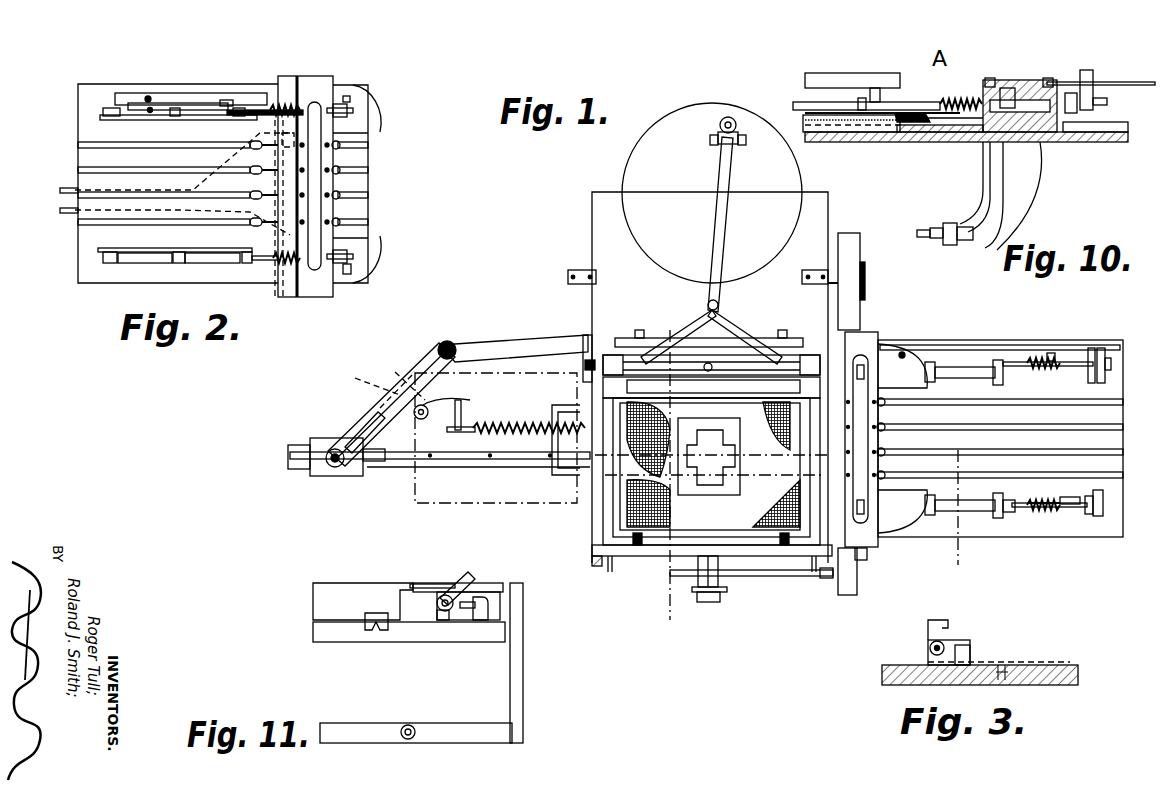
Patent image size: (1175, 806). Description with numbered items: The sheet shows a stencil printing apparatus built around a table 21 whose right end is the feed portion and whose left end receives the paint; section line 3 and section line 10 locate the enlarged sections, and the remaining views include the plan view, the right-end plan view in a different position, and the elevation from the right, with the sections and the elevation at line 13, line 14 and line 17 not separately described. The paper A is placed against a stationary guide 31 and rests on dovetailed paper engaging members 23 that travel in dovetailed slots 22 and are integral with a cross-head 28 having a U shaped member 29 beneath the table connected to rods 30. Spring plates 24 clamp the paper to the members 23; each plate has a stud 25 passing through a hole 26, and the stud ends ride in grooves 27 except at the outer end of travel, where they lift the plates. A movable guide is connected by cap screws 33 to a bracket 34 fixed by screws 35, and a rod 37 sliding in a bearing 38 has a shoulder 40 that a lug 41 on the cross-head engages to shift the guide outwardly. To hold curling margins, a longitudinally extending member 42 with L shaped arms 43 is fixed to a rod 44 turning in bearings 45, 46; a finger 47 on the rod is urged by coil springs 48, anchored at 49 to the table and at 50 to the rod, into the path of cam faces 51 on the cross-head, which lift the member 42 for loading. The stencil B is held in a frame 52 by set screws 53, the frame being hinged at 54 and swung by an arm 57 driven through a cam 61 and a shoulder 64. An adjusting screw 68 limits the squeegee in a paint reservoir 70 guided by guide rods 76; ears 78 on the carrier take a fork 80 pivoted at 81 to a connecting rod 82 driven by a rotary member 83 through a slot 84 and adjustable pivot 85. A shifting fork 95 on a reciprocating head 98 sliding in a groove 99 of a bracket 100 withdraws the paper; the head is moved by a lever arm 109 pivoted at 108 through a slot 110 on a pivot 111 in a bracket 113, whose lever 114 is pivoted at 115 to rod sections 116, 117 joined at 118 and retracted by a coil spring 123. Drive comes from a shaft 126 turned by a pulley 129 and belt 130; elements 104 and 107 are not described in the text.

In FIG. 1, the section line 3— 3 is at (945, 462).
In FIG. 2, the section line 10— 10 is at (398, 128).
In FIG. 1, the direction arrow 13 is at (695, 290).
In FIG. 1, the direction arrow 14 is at (698, 624).
In FIG. 1, the direction arrow 17 is at (300, 455).
In FIG. 2, the table 21 is at (90, 280).
In FIG. 10, the table 21 is at (1090, 143).
In FIG. 1, the table 21 is at (995, 340).
In FIG. 2, the dovetailed slots 22 is at (368, 222).
In FIG. 10, the dovetailed slots 22 is at (1112, 122).
In FIG. 1, the dovetailed slots 22 is at (1123, 398).
In FIG. 11, the dovetailed slots 22 is at (372, 632).
In FIG. 3, the dovetailed slots 22 is at (1008, 682).
In FIG. 2, the paper engaging members 23 is at (262, 198).
In FIG. 10, the paper engaging members 23 is at (935, 143).
In FIG. 10, the spring plates 24 is at (940, 90).
In FIG. 10, the stud 25 is at (893, 143).
In FIG. 10, the hole 26 is at (908, 143).
In FIG. 10, the grooves 27 is at (853, 142).
In FIG. 2, the cross-head 28 is at (368, 184).
In FIG. 10, the cross-head 28 is at (1067, 95).
In FIG. 1, the cross-head 28 is at (882, 437).
In FIG. 2, the U shaped member 29 is at (290, 297).
In FIG. 10, the U shaped member 29 is at (1032, 200).
In FIG. 1, the U shaped member 29 is at (865, 345).
In FIG. 2, the rods 30 is at (68, 212).
In FIG. 10, the rods 30 is at (932, 246).
In FIG. 2, the stationary guide 31 is at (212, 265).
In FIG. 3, the stationary guide 31 is at (968, 650).
In FIG. 2, the cap screws 33 is at (228, 100).
In FIG. 2, the bracket 34 is at (208, 93).
In FIG. 1, the bracket 34 is at (1020, 360).
In FIG. 2, the screws 35 is at (150, 96).
In FIG. 1, the screws 35 is at (902, 352).
In FIG. 2, the rod 37 is at (255, 108).
In FIG. 10, the rod 37 is at (1082, 120).
In FIG. 1, the rod 37 is at (1065, 358).
In FIG. 11, the rod 37 is at (478, 598).
In FIG. 2, the bearing 38 is at (342, 102).
In FIG. 10, the bearing 38 is at (1088, 78).
In FIG. 1, the bearing 38 is at (1100, 350).
In FIG. 11, the bearing 38 is at (480, 622).
In FIG. 1, the shoulder 40 is at (1052, 353).
In FIG. 1, the lug 41 is at (890, 325).
In FIG. 2, the longitudinally extending member 42 is at (142, 248).
In FIG. 10, the longitudinally extending member 42 is at (872, 88).
In FIG. 1, the longitudinally extending member 42 is at (975, 516).
In FIG. 3, the longitudinally extending member 42 is at (965, 660).
In FIG. 2, the L shaped arms 43 is at (107, 265).
In FIG. 10, the L shaped arms 43 is at (880, 107).
In FIG. 1, the L shaped arms 43 is at (1008, 512).
In FIG. 3, the L shaped arms 43 is at (960, 645).
In FIG. 2, the rod 44 is at (150, 265).
In FIG. 10, the rod 44 is at (835, 103).
In FIG. 1, the rod 44 is at (1072, 516).
In FIG. 11, the rod 44 is at (435, 588).
In FIG. 3, the rod 44 is at (928, 648).
In FIG. 2, the bearing 45 is at (243, 265).
In FIG. 1, the bearing 45 is at (1090, 516).
In FIG. 11, the bearing 45 is at (445, 620).
In FIG. 2, the bearing 46 is at (124, 285).
In FIG. 1, the bearing 46 is at (870, 550).
In FIG. 2, the finger 47 is at (366, 91).
In FIG. 10, the finger 47 is at (1090, 70).
In FIG. 1, the finger 47 is at (1111, 365).
In FIG. 11, the finger 47 is at (472, 575).
In FIG. 2, the coil springs 48 is at (307, 297).
In FIG. 10, the coil springs 48 is at (1010, 100).
In FIG. 1, the coil springs 48 is at (1045, 368).
In FIG. 2, the spring anchorage on table 49 is at (302, 78).
In FIG. 10, the spring anchorage on table 49 is at (962, 143).
In FIG. 1, the spring anchorage on table 49 is at (1035, 516).
In FIG. 10, the spring anchorage on rod 50 is at (1017, 132).
In FIG. 1, the spring anchorage on rod 50 is at (1072, 508).
In FIG. 2, the cam faces 51 is at (383, 108).
In FIG. 1, the cam faces 51 is at (930, 355).
In FIG. 11, the cam faces 51 is at (420, 583).
In FIG. 1, the frame 52 is at (792, 556).
In FIG. 1, the set screws 53 is at (638, 556).
In FIG. 1, the hinges 54 is at (575, 270).
In FIG. 1, the arm 57 is at (730, 593).
In FIG. 1, the cam 61 is at (745, 578).
In FIG. 1, the shoulder 64 is at (722, 602).
In FIG. 1, the adjusting screw 68 is at (714, 368).
In FIG. 1, the paint reservoir 70 is at (730, 404).
In FIG. 1, the guide rods 76 is at (593, 566).
In FIG. 1, the ears 78 is at (583, 360).
In FIG. 1, the fork 80 is at (755, 340).
In FIG. 1, the pivot 81 is at (720, 338).
In FIG. 1, the connecting rod 82 is at (722, 225).
In FIG. 1, the rotary member 83 is at (708, 110).
In FIG. 1, the slot 84 is at (732, 118).
In FIG. 1, the pivot 85 is at (740, 125).
In FIG. 1, the shifting fork 95 is at (565, 478).
In FIG. 1, the reciprocating head 98 is at (356, 476).
In FIG. 1, the groove 99 is at (300, 470).
In FIG. 1, the bracket 100 is at (452, 470).
In FIG. 1, the collar 104 is at (378, 462).
In FIG. 1, the lever arm 107 is at (375, 418).
In FIG. 1, the pivot 108 is at (334, 468).
In FIG. 1, the lever arm 109 is at (388, 408).
In FIG. 1, the slot 110 is at (358, 425).
In FIG. 1, the pivot 111 is at (448, 340).
In FIG. 1, the bracket 113 is at (525, 338).
In FIG. 1, the lever 114 is at (415, 380).
In FIG. 1, the pivot 115 is at (360, 378).
In FIG. 1, the connecting rod section 116 is at (426, 408).
In FIG. 1, the connecting rod section 117 is at (495, 425).
In FIG. 1, the pivot 118 is at (470, 400).
In FIG. 1, the coil spring 123 is at (525, 425).
In FIG. 1, the shaft 126 is at (866, 268).
In FIG. 1, the pulley 129 is at (862, 250).
In FIG. 1, the belt 130 is at (850, 245).
In FIG. 1, the paper A is at (490, 505).
In FIG. 1, the stencil B is at (743, 530).